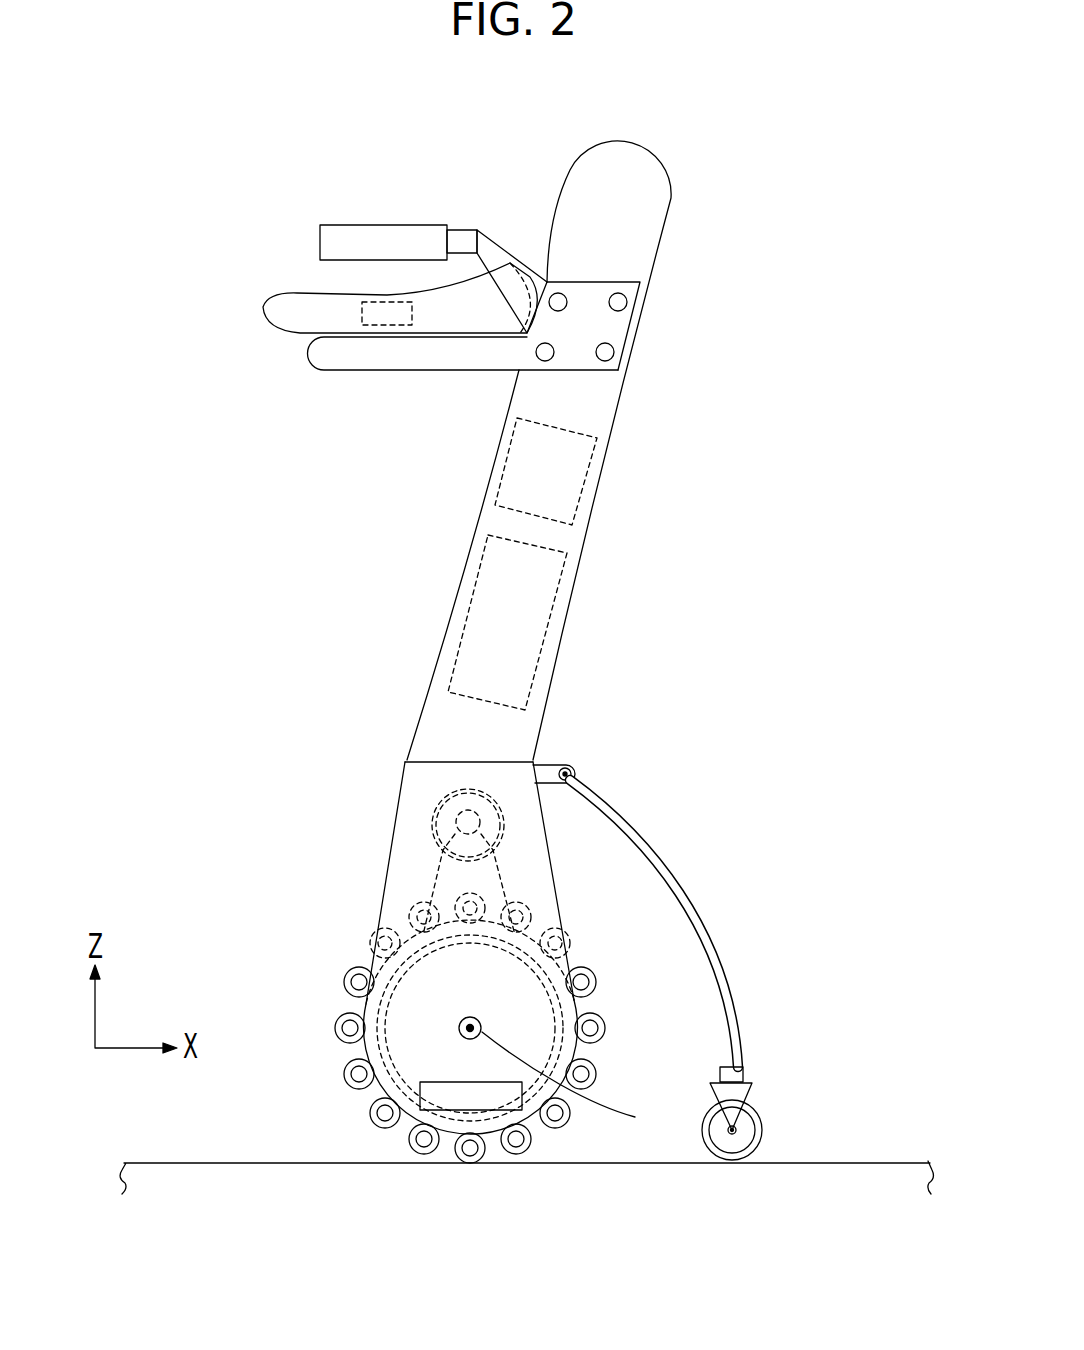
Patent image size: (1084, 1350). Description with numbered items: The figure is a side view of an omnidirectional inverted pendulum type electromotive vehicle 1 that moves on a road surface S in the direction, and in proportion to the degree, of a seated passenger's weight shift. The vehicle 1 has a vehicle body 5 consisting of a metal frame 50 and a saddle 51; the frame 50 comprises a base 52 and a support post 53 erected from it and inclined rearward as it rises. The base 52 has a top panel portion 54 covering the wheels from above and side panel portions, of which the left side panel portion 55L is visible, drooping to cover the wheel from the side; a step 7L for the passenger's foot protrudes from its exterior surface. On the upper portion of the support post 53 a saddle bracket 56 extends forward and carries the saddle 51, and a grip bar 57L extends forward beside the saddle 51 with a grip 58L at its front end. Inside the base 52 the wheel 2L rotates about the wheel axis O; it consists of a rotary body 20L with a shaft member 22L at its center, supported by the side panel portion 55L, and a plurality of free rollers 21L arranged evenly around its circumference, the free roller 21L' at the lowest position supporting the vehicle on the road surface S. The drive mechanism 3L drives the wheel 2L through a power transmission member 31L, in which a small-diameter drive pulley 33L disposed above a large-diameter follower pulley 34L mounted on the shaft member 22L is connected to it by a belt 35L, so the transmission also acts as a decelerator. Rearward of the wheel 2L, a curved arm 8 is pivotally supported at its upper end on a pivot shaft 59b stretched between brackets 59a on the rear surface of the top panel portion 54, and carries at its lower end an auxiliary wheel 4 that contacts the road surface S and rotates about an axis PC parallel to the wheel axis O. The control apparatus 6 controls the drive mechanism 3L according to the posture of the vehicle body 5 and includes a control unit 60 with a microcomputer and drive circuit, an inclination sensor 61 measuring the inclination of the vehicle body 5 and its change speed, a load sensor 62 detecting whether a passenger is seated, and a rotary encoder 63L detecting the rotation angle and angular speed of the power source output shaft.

The vehicle 1 is at (765, 150).
The wheel 2L is at (577, 1122).
The drive mechanism 3L is at (477, 783).
The auxiliary wheel 4 is at (762, 1135).
The vehicle body 5 is at (413, 828).
The control apparatus 6 is at (150, 373).
The step 7L is at (420, 1083).
The arm 8 is at (728, 988).
The rotary body 20L is at (612, 1013).
The free roller 21L is at (470, 1121).
The free roller at lowest position 21L' is at (467, 1203).
The shaft member 22L is at (582, 1083).
The power transmission member 31L is at (801, 793).
The drive pulley 33L is at (504, 825).
The follower pulley 34L is at (560, 932).
The belt 35L is at (512, 885).
The frame 50 is at (735, 570).
The saddle 51 is at (287, 303).
The base 52 is at (537, 758).
The support post 53 is at (585, 543).
The top panel portion 54 is at (452, 760).
The side panel portion 55L is at (370, 885).
The saddle bracket 56 is at (396, 370).
The grip bar 57L is at (487, 248).
The grip 58L is at (385, 237).
The bracket 59a is at (560, 760).
The pivot shaft 59b is at (572, 776).
The control unit 60 is at (470, 597).
The inclination sensor 61 is at (497, 455).
The load sensor 62 is at (362, 313).
The rotary encoder 63L is at (433, 828).
The wheel axis O is at (459, 1022).
The rotation axis PC is at (728, 1142).
The road surface S is at (865, 1161).